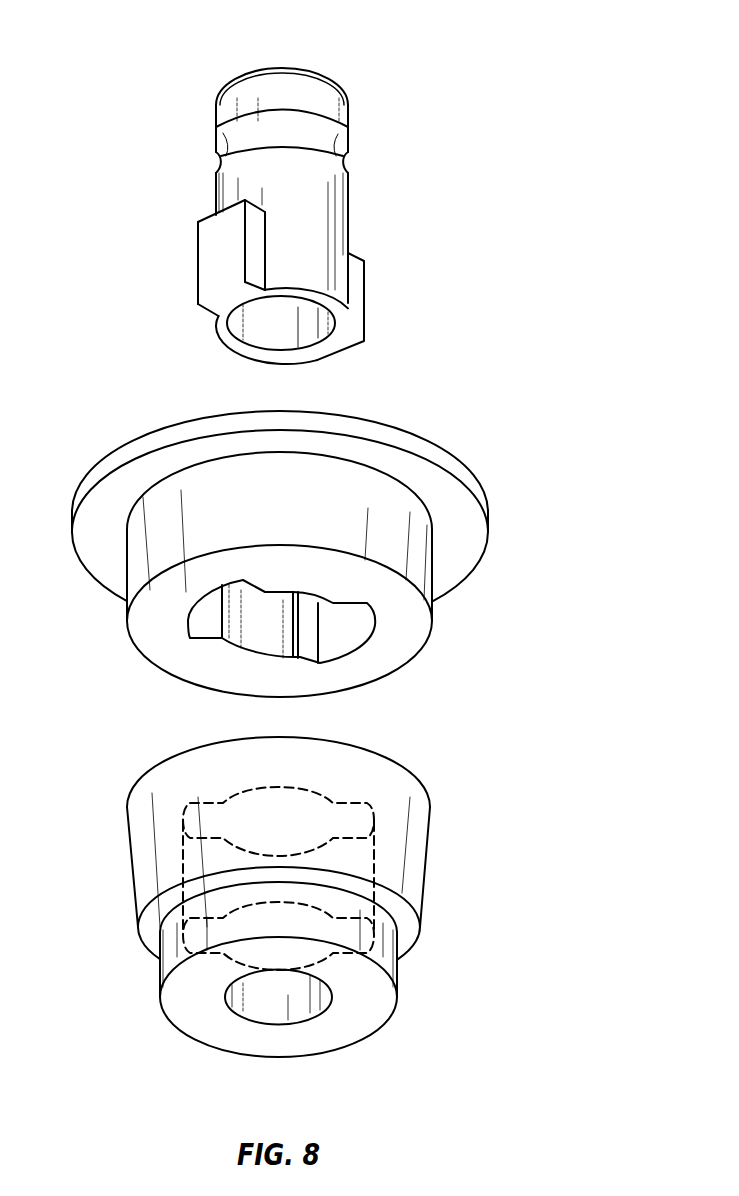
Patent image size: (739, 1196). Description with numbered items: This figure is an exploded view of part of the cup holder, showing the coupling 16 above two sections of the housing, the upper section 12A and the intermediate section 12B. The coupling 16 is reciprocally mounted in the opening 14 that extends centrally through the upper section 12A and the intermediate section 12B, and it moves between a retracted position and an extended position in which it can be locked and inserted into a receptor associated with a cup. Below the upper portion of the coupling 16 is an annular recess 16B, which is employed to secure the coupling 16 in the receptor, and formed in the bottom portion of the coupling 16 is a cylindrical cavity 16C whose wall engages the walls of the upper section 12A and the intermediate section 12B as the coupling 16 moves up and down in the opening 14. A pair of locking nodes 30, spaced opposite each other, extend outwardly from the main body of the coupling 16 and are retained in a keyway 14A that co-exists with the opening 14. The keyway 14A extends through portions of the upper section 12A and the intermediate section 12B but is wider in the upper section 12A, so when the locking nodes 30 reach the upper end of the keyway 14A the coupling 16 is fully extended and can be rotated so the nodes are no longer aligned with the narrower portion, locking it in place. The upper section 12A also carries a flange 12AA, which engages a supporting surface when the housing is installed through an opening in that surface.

The coupling 16 is at (330, 64).
The annular recess 16B is at (312, 138).
The cylindrical cavity 16C is at (281, 324).
The locking nodes 30 is at (213, 247).
The flange 12AA is at (453, 502).
The upper section 12A is at (407, 550).
The opening 14 is at (262, 630).
The keyway 14A is at (203, 615).
The intermediate section 12B is at (410, 858).